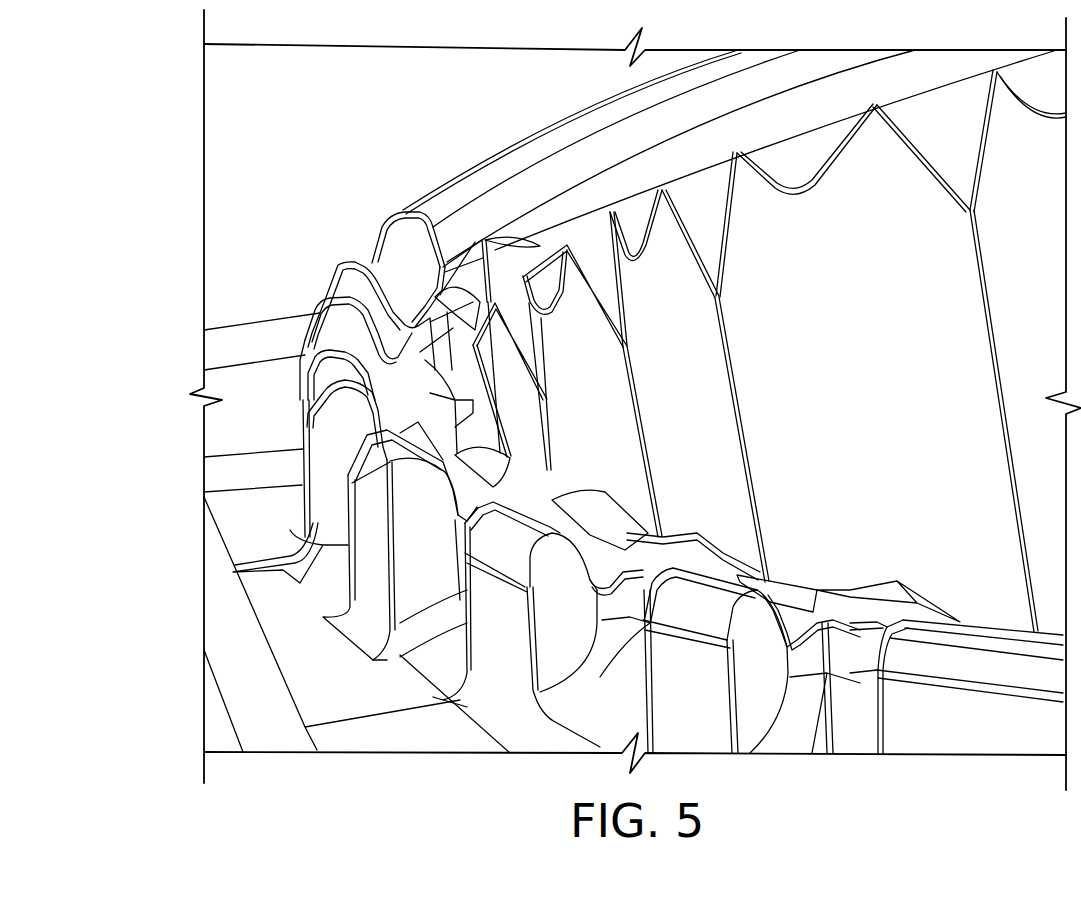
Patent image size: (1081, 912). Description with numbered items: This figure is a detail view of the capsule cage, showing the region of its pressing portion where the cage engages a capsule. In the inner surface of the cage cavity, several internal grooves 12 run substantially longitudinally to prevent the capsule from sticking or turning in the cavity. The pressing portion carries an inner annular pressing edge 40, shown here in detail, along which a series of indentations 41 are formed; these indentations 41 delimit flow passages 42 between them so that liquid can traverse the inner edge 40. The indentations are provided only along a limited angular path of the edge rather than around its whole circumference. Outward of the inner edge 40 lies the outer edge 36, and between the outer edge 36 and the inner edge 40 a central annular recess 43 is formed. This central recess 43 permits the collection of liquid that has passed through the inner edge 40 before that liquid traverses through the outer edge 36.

The internal grooves 12 is at (695, 382).
The outer edge 36 is at (507, 128).
The inner annular pressing edge 40 is at (613, 163).
The indentations 41 is at (710, 543).
The flow passages 42 is at (482, 462).
The central annular recess 43 is at (509, 211).